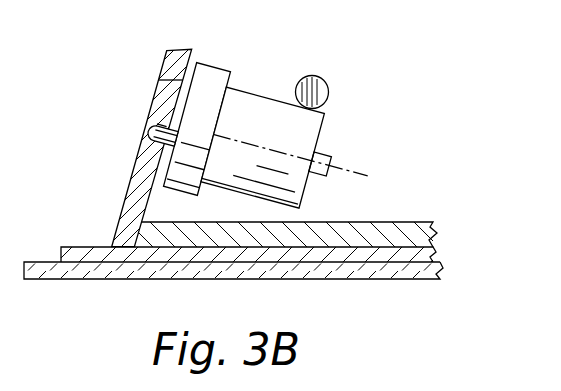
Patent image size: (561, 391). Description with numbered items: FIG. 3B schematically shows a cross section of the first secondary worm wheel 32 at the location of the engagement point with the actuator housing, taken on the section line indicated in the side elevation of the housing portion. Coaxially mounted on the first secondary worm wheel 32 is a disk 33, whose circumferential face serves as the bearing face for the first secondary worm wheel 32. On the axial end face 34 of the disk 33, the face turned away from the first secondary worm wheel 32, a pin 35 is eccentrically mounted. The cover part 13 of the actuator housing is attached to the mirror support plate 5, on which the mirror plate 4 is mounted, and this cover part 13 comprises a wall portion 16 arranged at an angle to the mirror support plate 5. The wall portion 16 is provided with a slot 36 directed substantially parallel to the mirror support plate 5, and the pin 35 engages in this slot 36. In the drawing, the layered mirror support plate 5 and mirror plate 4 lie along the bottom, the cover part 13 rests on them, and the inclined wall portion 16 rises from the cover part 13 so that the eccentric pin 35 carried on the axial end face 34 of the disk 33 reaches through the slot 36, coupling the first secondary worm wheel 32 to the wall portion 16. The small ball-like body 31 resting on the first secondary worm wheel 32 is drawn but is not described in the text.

The mirror plate 4 is at (85, 279).
The mirror support plate 5 is at (82, 247).
The cover part 13 is at (332, 230).
The wall portion 16 is at (133, 187).
The ball 31 is at (317, 78).
The first secondary worm wheel 32 is at (297, 125).
The disk 33 is at (216, 63).
The axial end face 34 is at (159, 80).
The pin 35 is at (147, 128).
The slot 36 is at (148, 130).